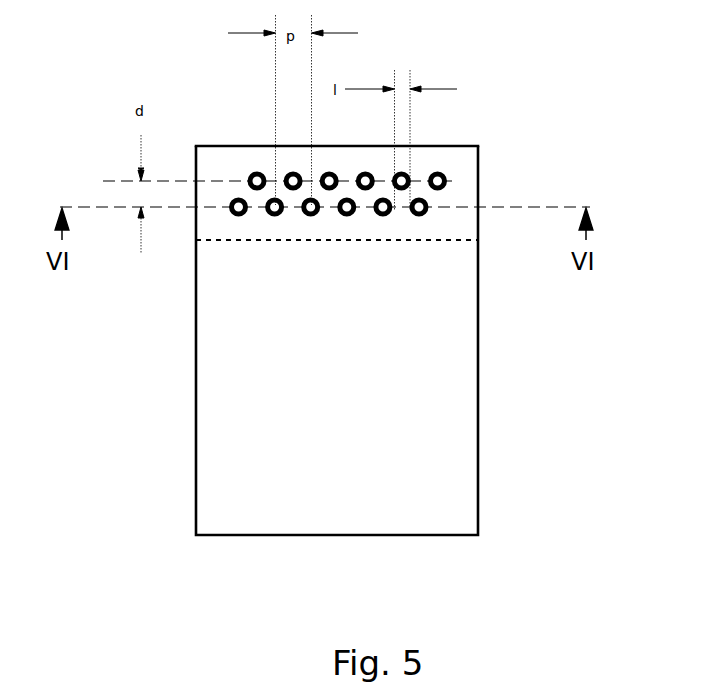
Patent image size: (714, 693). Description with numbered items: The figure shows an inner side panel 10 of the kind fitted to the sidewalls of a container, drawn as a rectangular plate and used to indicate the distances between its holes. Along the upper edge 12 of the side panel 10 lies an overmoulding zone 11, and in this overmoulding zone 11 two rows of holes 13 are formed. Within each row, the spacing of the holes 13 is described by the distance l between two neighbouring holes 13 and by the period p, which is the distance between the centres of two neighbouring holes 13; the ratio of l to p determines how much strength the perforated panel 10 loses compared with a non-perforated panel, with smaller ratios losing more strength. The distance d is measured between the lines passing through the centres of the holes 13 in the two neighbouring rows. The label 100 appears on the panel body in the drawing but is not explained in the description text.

The inner side panel 10 is at (453, 405).
The overmoulding zone 11 is at (468, 207).
The edge 12 is at (250, 145).
The holes 13 is at (447, 175).
The device 100 is at (348, 377).